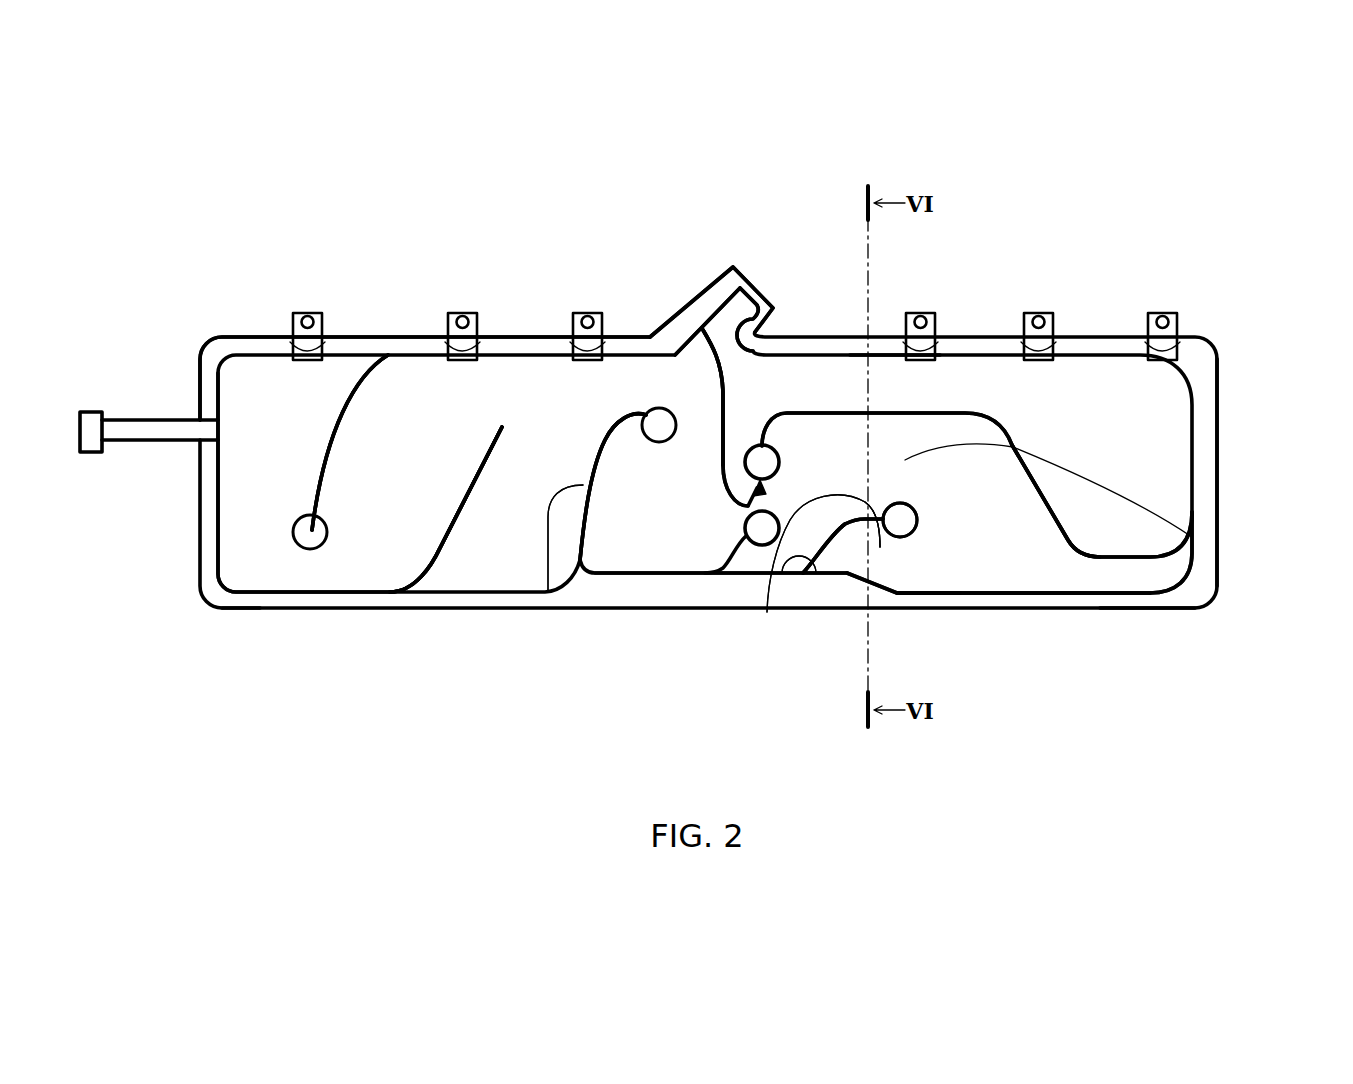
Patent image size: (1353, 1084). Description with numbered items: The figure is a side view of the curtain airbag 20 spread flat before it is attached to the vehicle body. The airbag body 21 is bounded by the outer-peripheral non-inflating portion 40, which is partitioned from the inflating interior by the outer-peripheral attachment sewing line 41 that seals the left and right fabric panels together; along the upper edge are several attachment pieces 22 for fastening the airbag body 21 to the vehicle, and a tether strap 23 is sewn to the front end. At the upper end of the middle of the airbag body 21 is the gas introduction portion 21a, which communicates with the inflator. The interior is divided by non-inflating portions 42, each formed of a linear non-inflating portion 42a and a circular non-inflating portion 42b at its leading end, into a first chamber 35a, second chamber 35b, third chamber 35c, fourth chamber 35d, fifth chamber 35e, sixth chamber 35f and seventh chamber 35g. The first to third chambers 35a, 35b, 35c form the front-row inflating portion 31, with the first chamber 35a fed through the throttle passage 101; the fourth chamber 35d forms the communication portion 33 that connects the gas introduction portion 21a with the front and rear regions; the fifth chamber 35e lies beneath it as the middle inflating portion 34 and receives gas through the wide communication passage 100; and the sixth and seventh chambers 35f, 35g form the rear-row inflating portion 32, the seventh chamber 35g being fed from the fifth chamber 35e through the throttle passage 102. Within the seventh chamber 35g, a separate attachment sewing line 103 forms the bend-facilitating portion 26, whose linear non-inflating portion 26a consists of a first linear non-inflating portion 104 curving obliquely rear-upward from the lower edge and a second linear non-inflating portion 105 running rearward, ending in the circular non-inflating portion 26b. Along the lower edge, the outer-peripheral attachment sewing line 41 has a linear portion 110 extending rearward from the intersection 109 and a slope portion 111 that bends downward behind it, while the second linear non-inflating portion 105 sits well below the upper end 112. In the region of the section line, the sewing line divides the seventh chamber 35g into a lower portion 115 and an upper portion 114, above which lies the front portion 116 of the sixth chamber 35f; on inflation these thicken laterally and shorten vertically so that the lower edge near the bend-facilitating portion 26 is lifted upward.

The curtain airbag 20 is at (389, 212).
The airbag body 21 is at (1218, 386).
The gas introduction portion 21a is at (730, 300).
The attachment pieces 22 is at (313, 312).
The tether strap 23 is at (122, 428).
The bend-facilitating portion 26 is at (873, 790).
The linear non-inflating portion 26a is at (843, 542).
The circular non-inflating portion 26b is at (900, 540).
The front-row inflating portion 31 is at (345, 546).
The rear-row inflating portion 32 is at (1043, 548).
The communication portion 33 is at (651, 376).
The middle inflating portion 34 is at (581, 610).
The first chamber 35a is at (263, 477).
The second chamber 35b is at (360, 531).
The third chamber 35c is at (497, 540).
The fourth chamber 35d is at (693, 427).
The fifth chamber 35e is at (550, 593).
The sixth chamber 35f is at (1173, 437).
The seventh chamber 35g is at (1050, 572).
The outer-peripheral non-inflating portion 40 is at (198, 390).
The outer-peripheral attachment sewing line 41 is at (255, 594).
The non-inflating portions 42 is at (342, 408).
The linear non-inflating portion 42a is at (773, 513).
The circular non-inflating portion 42b is at (751, 447).
The communication passage 100 is at (659, 425).
The throttle passage 101 is at (310, 550).
The throttle passage 102 is at (767, 497).
The attachment sewing line 103 is at (707, 703).
The first linear non-inflating portion 104 is at (782, 573).
The second linear non-inflating portion 105 is at (767, 612).
The intersection 109 is at (800, 575).
The linear portion 110 is at (740, 575).
The slope portion 111 is at (880, 547).
The upper end 112 is at (683, 345).
The upper portion 114 is at (1213, 538).
The lower portion 115 is at (910, 563).
The front portion 116 is at (892, 385).